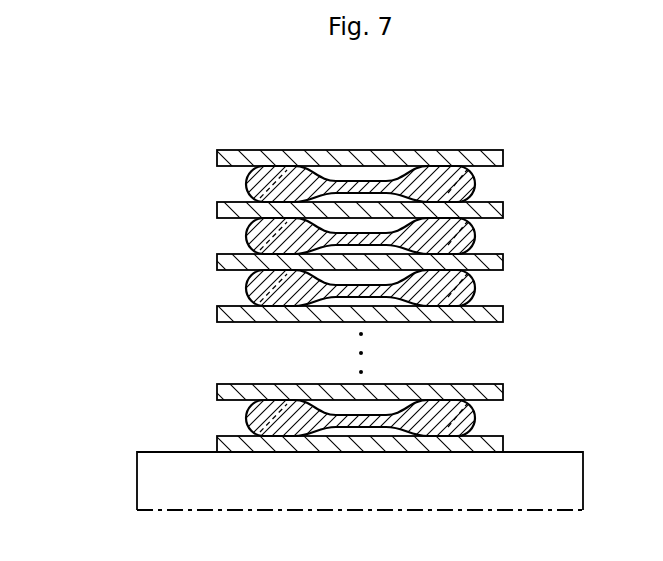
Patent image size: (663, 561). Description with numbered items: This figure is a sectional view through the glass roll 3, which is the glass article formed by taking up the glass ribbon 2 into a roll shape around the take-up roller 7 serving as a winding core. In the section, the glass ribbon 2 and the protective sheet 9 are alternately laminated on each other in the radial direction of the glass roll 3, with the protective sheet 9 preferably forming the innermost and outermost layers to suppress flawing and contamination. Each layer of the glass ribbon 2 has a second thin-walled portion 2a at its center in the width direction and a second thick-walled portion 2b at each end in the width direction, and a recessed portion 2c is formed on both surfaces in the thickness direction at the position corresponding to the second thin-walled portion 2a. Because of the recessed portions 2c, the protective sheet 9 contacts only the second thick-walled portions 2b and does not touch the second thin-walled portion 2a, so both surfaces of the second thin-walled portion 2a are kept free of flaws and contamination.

The glass ribbon 2 is at (221, 193).
The second thin-walled portion 2a is at (358, 182).
The second thick-walled portion 2b is at (252, 186).
The recessed portion 2c is at (335, 180).
The glass roll 3 is at (406, 268).
The take-up roller 7 is at (562, 481).
The protective sheet 9 is at (489, 157).